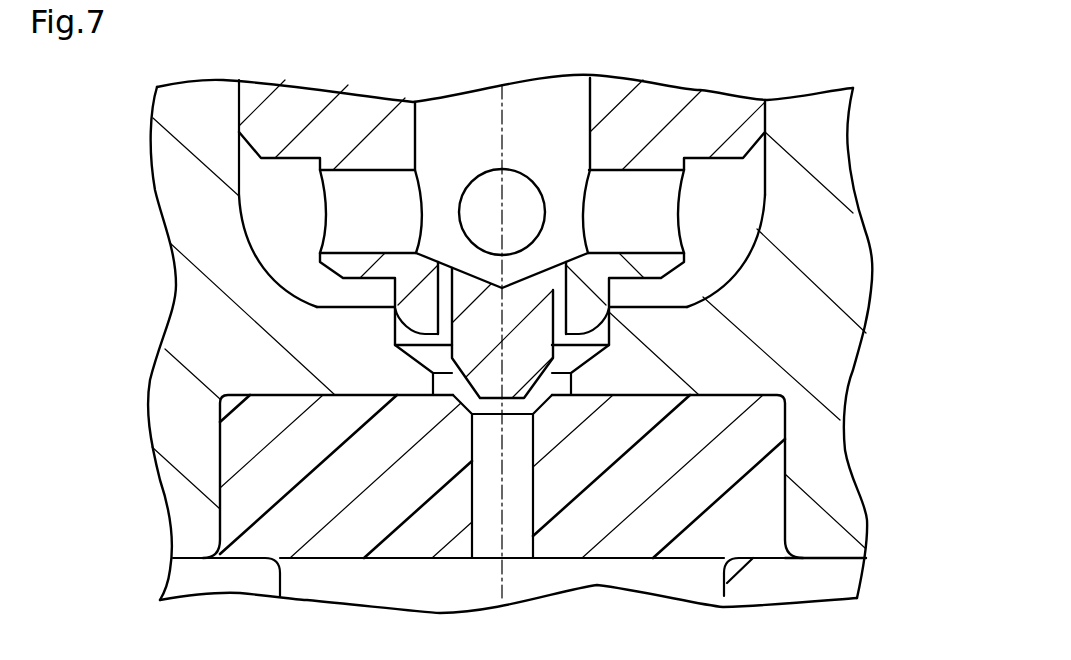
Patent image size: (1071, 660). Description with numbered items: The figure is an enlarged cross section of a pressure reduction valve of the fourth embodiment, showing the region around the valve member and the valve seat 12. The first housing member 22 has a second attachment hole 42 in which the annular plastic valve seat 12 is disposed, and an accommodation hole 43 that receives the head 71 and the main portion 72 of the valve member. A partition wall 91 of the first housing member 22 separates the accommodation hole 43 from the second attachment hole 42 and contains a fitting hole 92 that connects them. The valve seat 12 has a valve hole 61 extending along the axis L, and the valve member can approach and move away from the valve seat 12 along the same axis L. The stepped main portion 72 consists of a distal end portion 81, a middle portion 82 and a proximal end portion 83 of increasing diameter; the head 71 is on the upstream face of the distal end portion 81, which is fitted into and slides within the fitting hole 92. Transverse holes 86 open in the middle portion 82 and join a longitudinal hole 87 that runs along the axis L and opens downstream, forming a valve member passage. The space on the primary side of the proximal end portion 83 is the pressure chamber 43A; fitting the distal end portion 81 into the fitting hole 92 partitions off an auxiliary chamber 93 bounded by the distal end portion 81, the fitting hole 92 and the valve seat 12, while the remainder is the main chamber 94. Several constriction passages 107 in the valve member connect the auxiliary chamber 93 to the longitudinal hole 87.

The valve seat 12 is at (323, 560).
The first housing member 22 is at (858, 470).
The second attachment hole 42 is at (783, 532).
The accommodation hole 43 is at (763, 160).
The pressure chamber 43A is at (278, 251).
The valve hole 61 is at (530, 545).
The head 71 is at (474, 397).
The main portion 72 is at (406, 212).
The distal end portion 81 is at (403, 297).
The middle portion 82 is at (340, 213).
The proximal end portion 83 is at (260, 130).
The transverse hole 86 is at (478, 188).
The longitudinal hole 87 is at (418, 112).
The partition wall 91 is at (638, 327).
The fitting hole 92 is at (398, 332).
The auxiliary chamber 93 is at (562, 358).
The main chamber 94 is at (727, 238).
The constriction passage 107 is at (447, 317).
The axis L is at (502, 130).